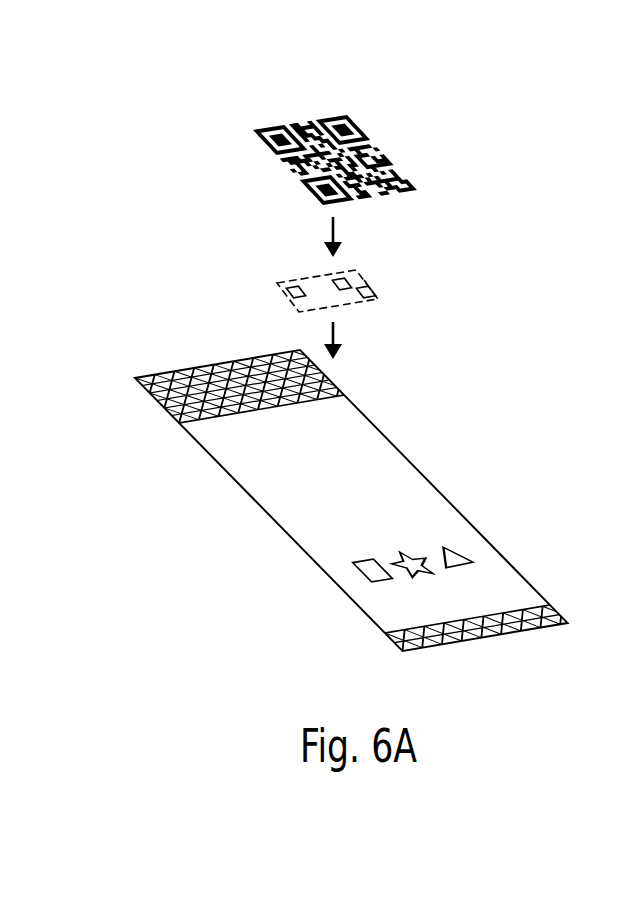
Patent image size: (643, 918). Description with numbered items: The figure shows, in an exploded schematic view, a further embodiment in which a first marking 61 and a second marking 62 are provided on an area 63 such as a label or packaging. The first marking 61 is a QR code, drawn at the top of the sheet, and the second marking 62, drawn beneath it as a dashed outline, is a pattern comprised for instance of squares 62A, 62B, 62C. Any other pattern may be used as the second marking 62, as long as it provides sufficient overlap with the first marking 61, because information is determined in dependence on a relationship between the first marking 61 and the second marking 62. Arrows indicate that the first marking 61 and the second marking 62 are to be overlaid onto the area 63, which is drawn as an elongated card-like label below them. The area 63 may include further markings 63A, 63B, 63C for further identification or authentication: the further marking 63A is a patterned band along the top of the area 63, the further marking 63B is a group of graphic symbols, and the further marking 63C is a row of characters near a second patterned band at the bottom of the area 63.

The first marking 61 is at (370, 143).
The second marking 62 is at (378, 299).
The square 62A is at (372, 290).
The square 62B is at (357, 272).
The square 62C is at (285, 295).
The area 63 is at (348, 501).
The further marking 63A is at (236, 387).
The further marking 63B is at (414, 563).
The further marking 63C is at (467, 611).